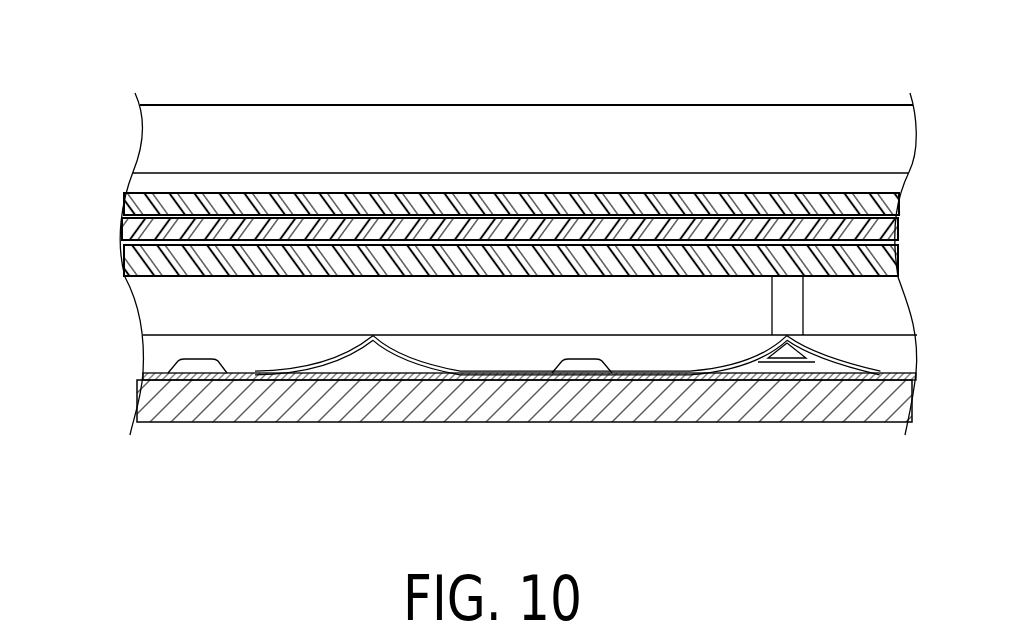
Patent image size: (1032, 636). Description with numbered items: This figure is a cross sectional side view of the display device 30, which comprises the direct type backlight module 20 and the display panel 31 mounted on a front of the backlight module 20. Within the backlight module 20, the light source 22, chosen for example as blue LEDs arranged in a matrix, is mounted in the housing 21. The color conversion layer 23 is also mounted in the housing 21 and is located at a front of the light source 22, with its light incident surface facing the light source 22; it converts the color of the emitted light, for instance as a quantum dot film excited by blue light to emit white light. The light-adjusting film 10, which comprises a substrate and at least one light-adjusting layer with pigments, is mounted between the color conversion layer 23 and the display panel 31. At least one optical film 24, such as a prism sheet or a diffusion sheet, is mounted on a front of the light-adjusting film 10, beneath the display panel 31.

The light-adjusting film 10 is at (463, 208).
The backlight module 20 is at (493, 401).
The housing 21 is at (323, 408).
The light source 22 is at (197, 358).
The color conversion layer 23 is at (153, 257).
The optical film 24 is at (152, 205).
The display device 30 is at (518, 139).
The display panel 31 is at (325, 128).